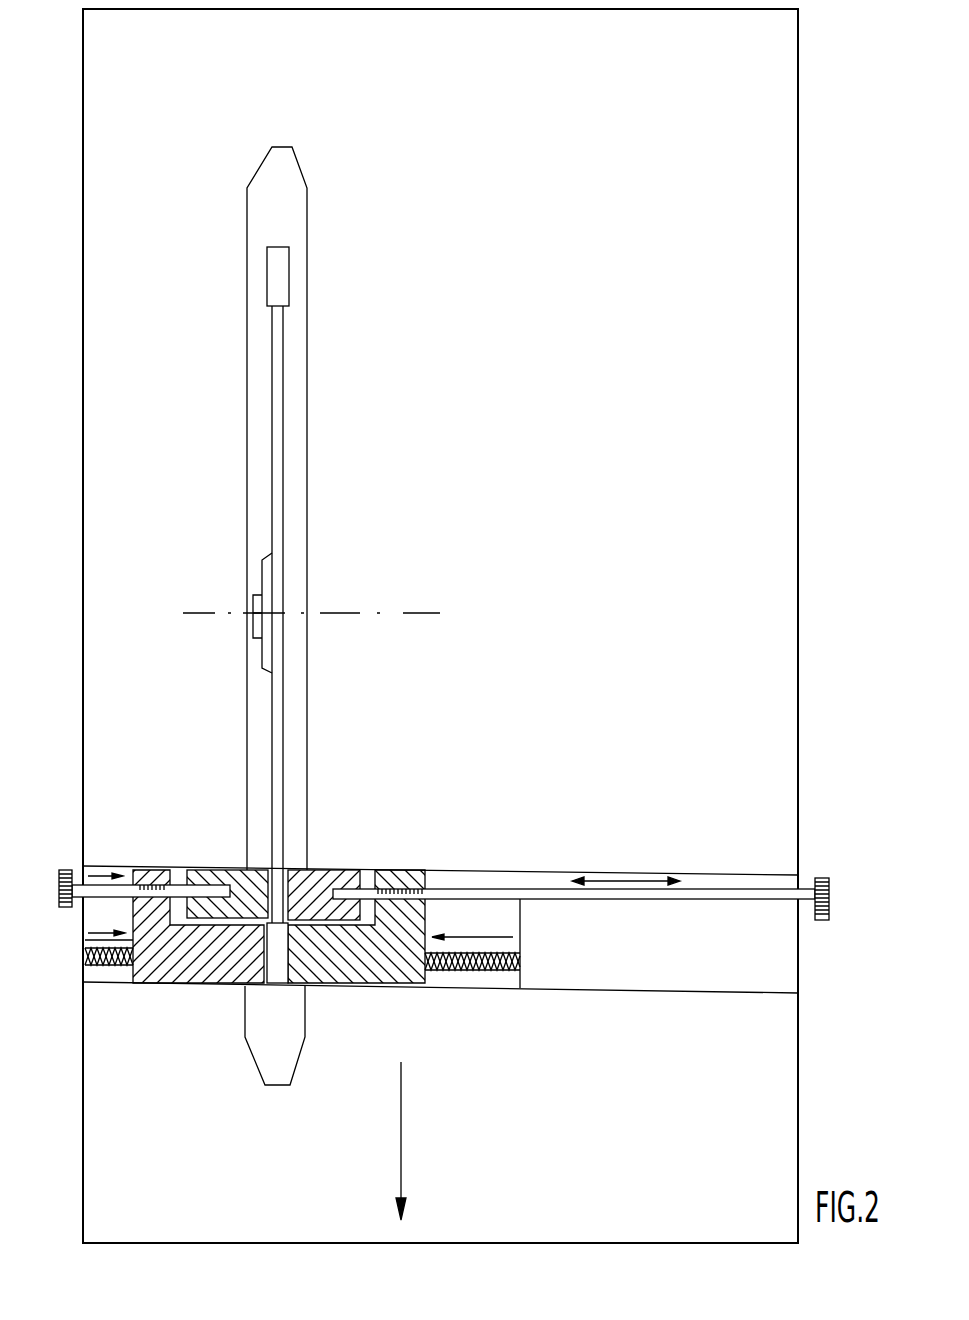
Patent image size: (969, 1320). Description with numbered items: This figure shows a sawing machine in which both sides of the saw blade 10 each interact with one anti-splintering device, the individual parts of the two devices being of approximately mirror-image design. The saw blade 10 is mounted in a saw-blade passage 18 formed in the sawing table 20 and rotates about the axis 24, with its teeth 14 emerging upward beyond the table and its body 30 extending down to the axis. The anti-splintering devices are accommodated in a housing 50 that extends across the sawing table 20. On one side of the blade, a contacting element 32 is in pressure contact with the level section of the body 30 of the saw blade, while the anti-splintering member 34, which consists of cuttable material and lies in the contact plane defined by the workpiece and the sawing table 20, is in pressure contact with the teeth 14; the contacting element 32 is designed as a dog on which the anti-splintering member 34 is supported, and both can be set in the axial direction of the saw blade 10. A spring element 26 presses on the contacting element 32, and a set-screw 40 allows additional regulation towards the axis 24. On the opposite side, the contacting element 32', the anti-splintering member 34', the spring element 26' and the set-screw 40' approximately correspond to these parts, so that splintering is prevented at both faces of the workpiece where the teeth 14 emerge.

The saw blade 10 is at (287, 366).
The teeth 14 is at (278, 985).
The saw-blade passage 18 is at (307, 210).
The sawing table 20 is at (799, 214).
The axis 24 is at (425, 613).
The spring element 26 is at (472, 999).
The spring element 26' is at (109, 993).
The body 30 is at (277, 456).
The contacting element 32 is at (324, 861).
The contacting element 32' is at (227, 860).
The anti-splintering member 34 is at (356, 959).
The anti-splintering member 34' is at (198, 959).
The set-screw 40 is at (584, 932).
The set-screw 40' is at (135, 855).
The housing 50 is at (522, 872).